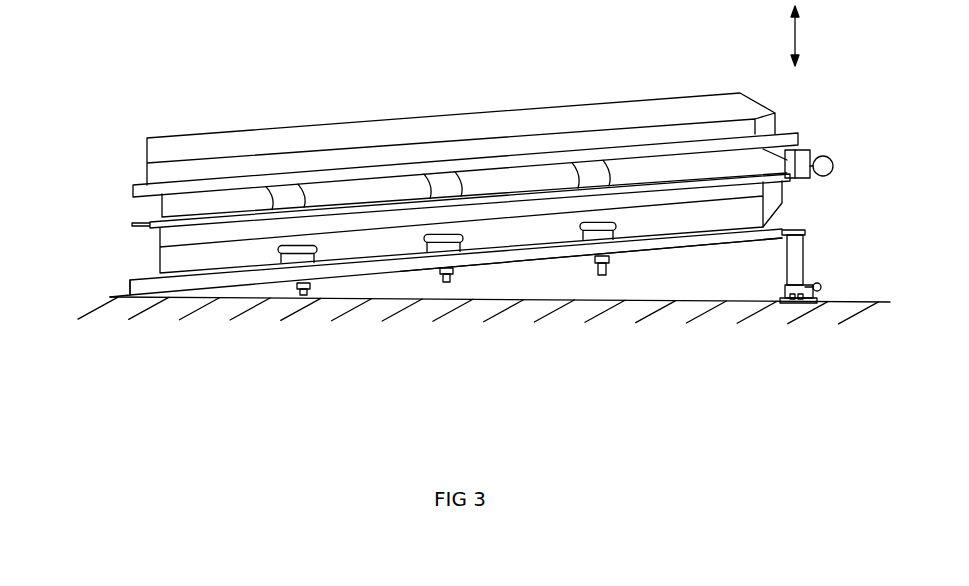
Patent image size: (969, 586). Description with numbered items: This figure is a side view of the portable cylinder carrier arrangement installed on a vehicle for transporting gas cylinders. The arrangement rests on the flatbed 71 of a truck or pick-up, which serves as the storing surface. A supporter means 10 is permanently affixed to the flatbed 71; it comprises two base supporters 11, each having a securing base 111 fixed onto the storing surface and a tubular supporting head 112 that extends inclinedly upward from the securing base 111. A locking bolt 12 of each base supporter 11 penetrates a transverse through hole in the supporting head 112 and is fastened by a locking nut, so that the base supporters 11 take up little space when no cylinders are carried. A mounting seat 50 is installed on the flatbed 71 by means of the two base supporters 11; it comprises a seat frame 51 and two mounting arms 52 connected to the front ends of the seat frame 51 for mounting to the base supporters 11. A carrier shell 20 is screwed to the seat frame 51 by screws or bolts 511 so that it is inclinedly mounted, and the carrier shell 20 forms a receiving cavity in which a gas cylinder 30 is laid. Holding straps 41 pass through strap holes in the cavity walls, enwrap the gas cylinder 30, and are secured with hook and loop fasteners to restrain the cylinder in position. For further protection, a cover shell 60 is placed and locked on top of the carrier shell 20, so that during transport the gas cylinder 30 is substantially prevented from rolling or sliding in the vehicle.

The supporter means 10 is at (844, 293).
The base supporter 11 is at (781, 311).
The locking bolt 12 is at (822, 287).
The carrier shell 20 is at (497, 240).
The gas cylinder 30 is at (650, 170).
The holding strap 41 is at (292, 250).
The mounting seat 50 is at (640, 264).
The seat frame 51 is at (688, 254).
The mounting arm 52 is at (793, 267).
The cover shell 60 is at (507, 122).
The flatbed 71 is at (117, 297).
The securing base 111 is at (801, 307).
The supporting head 112 is at (795, 304).
The screws or bolts 511 is at (800, 229).